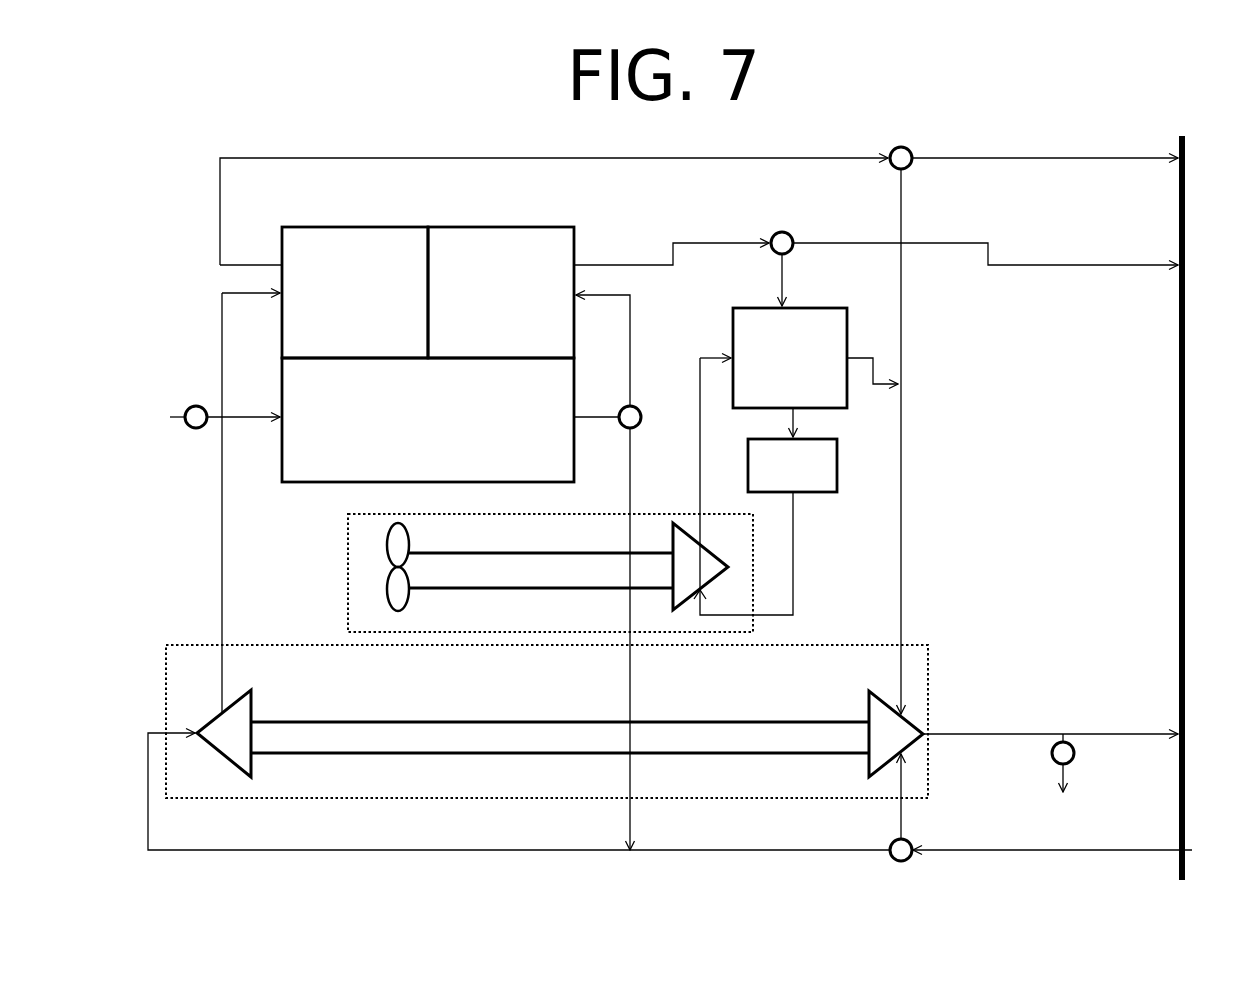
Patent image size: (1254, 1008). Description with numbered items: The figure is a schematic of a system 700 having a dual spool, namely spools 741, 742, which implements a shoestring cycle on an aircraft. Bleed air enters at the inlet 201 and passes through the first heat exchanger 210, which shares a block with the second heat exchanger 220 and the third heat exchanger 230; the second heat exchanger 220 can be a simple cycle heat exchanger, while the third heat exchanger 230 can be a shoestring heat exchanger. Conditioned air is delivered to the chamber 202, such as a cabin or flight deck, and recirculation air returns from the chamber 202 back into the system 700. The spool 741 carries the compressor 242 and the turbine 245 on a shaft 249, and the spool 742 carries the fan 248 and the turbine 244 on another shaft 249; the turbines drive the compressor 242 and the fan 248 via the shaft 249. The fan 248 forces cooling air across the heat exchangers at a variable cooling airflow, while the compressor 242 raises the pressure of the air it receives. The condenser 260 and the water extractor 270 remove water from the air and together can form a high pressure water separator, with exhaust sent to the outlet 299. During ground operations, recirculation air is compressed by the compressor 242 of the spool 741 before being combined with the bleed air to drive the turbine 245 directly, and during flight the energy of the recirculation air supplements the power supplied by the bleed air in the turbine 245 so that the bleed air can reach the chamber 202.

The system 700 is at (200, 178).
The chamber 202 is at (1183, 473).
The third heat exchanger 230 is at (375, 332).
The second heat exchanger 220 is at (521, 345).
The first heat exchanger 210 is at (448, 443).
The inlet 201 is at (206, 417).
The condenser 260 is at (810, 372).
The water extractor 270 is at (813, 480).
The spool 742 is at (348, 617).
The fan 248 is at (407, 529).
The shaft 249 is at (560, 653).
The turbine 244 is at (700, 566).
The spool 741 is at (166, 688).
The compressor 242 is at (224, 733).
The turbine 245 is at (896, 734).
The outlet 299 is at (1050, 790).